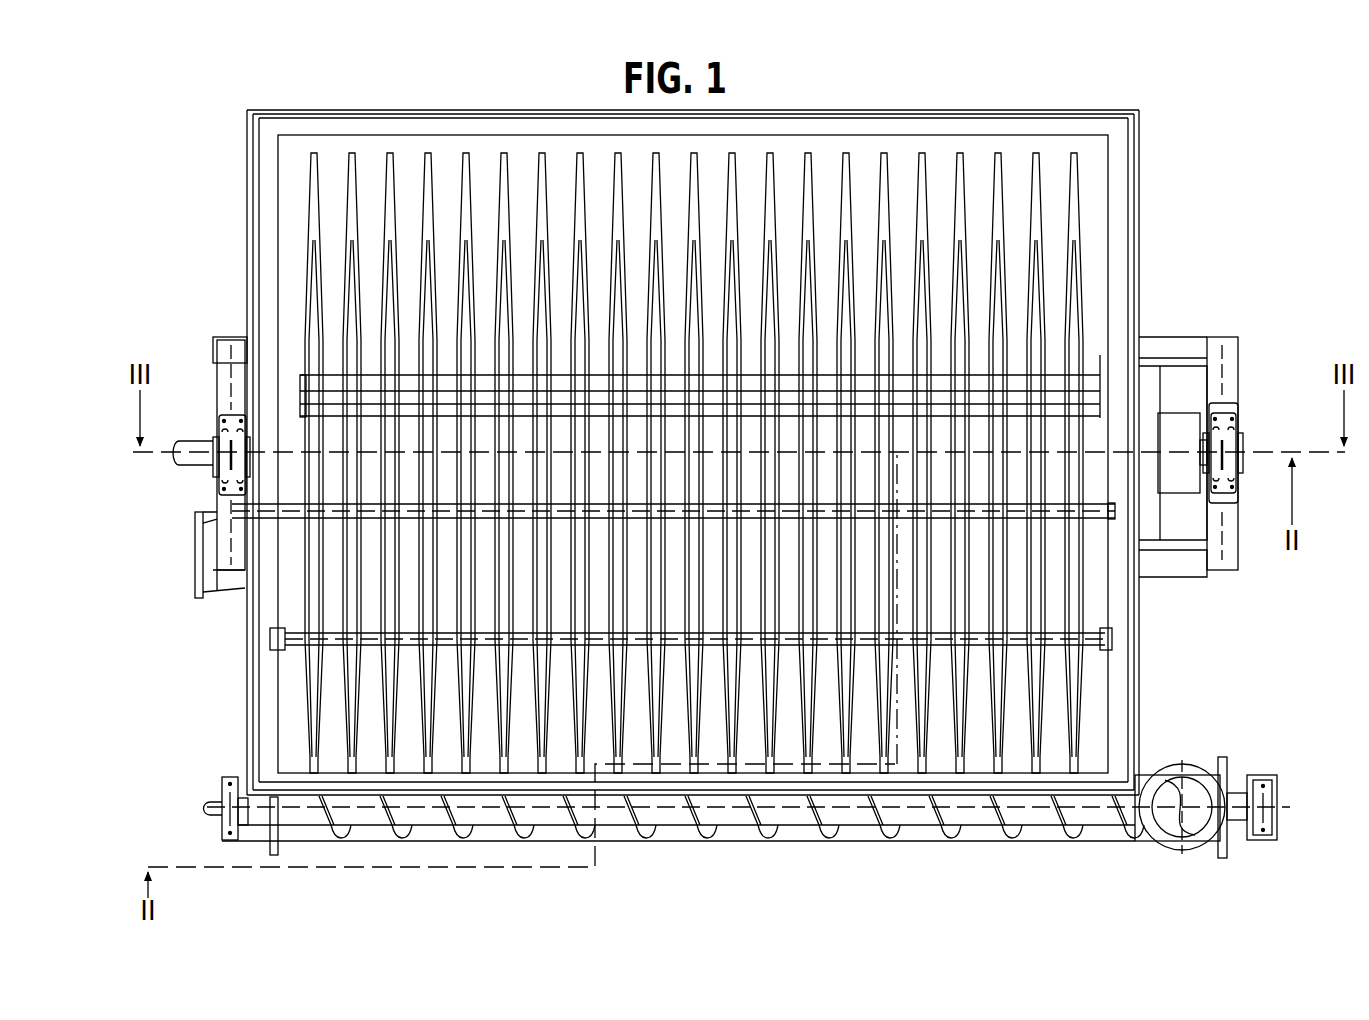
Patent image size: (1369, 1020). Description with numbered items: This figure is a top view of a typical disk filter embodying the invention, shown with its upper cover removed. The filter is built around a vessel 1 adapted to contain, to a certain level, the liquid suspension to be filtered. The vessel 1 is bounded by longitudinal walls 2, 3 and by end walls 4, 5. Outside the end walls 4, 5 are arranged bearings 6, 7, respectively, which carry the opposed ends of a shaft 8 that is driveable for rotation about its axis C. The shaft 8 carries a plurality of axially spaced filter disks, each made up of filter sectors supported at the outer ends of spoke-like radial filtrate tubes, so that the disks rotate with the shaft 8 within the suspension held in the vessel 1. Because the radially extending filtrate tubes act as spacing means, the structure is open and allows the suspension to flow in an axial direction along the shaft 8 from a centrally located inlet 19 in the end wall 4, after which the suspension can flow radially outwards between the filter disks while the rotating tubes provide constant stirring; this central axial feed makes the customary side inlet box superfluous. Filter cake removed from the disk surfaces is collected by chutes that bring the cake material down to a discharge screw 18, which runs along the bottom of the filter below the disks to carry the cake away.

The vessel 1 is at (1152, 663).
The longitudinal wall 2 is at (1070, 107).
The longitudinal wall 3 is at (860, 786).
The end wall 4 is at (247, 265).
The end wall 5 is at (1140, 234).
The bearing 6 is at (222, 418).
The bearing 7 is at (1238, 422).
The shaft 8 is at (1098, 430).
The discharge screw 18 is at (788, 834).
The inlet 19 is at (196, 582).
The axis C is at (166, 457).